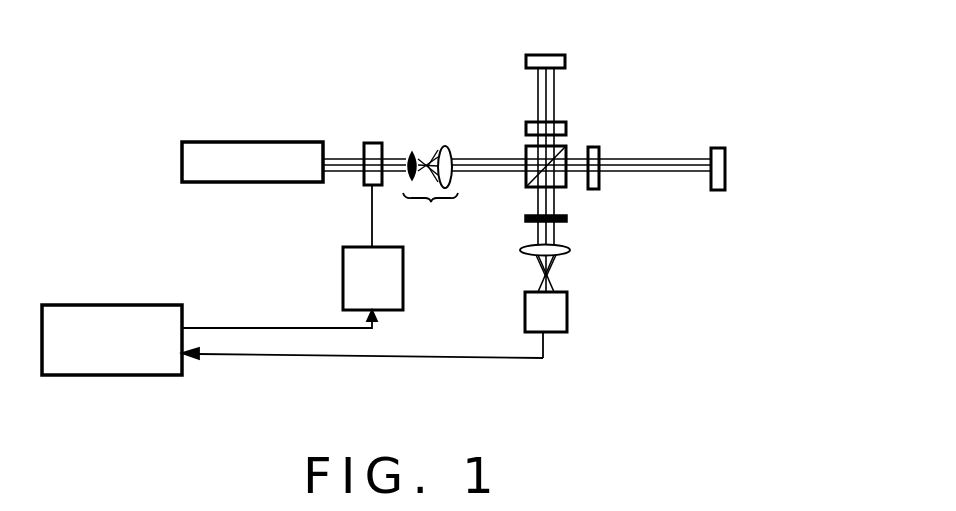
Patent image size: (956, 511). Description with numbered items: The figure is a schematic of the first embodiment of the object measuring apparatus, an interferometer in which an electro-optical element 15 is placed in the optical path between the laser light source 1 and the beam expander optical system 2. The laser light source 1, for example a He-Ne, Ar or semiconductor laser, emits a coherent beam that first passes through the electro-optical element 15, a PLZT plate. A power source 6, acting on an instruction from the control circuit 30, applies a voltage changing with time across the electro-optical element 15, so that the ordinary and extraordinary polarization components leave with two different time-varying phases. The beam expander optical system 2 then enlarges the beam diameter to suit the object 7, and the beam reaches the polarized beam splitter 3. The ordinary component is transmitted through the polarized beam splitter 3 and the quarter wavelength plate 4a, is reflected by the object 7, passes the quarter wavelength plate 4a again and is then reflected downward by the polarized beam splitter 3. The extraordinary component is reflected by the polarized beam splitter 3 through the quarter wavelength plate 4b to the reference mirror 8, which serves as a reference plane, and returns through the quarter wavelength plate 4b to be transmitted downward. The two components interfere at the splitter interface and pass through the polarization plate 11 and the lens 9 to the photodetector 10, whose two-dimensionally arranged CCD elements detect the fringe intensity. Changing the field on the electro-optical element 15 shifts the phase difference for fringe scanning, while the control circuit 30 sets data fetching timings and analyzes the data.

The laser light source 1 is at (237, 168).
The beam expander optical system 2 is at (430, 190).
The polarized beam splitter 3 is at (527, 182).
The quarter wavelength plate 4a is at (602, 153).
The quarter wavelength plate 4b is at (567, 123).
The power source 6 is at (353, 275).
The object 7 is at (723, 147).
The reference mirror 8 is at (565, 58).
The lens 9 is at (568, 250).
The photodetector 10 is at (568, 312).
The polarization plate 11 is at (568, 218).
The electro-optical element 15 is at (378, 142).
The control circuit 30 is at (127, 315).